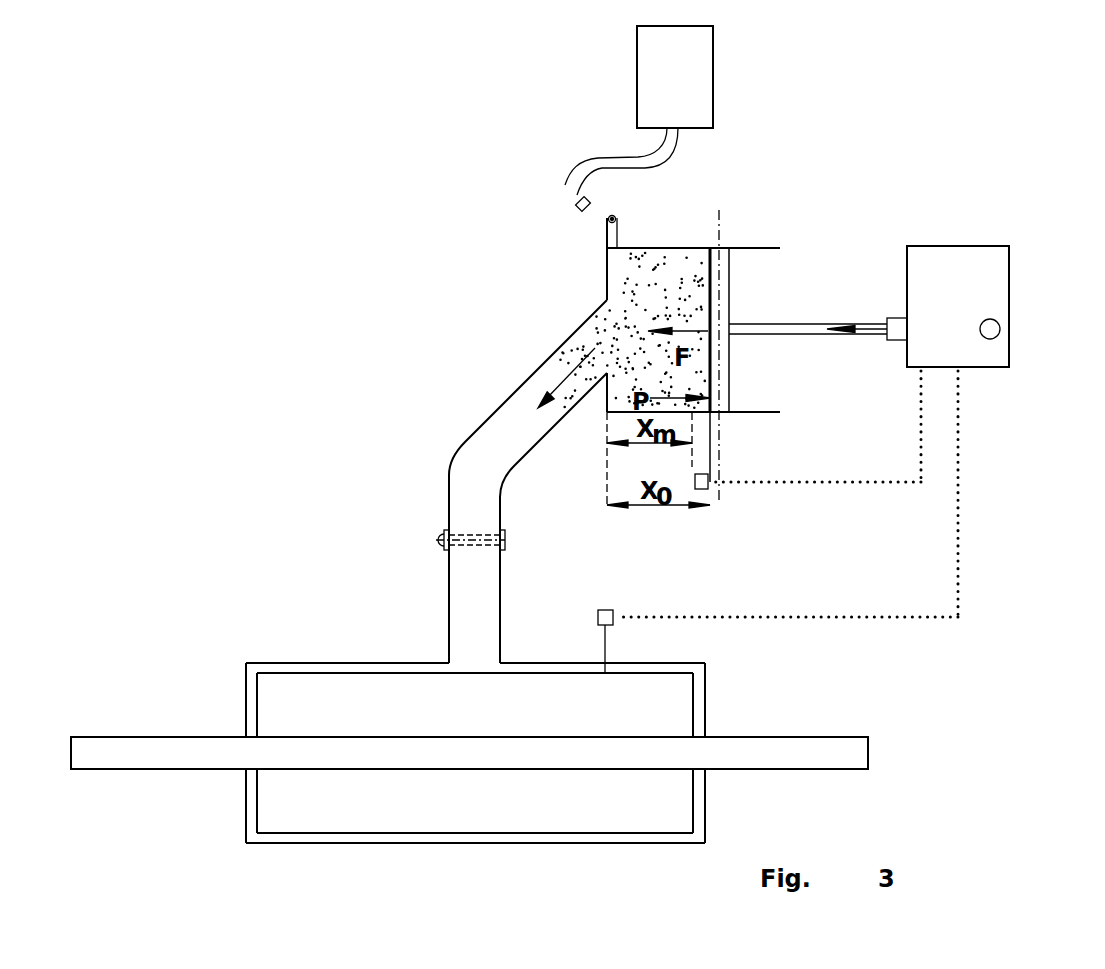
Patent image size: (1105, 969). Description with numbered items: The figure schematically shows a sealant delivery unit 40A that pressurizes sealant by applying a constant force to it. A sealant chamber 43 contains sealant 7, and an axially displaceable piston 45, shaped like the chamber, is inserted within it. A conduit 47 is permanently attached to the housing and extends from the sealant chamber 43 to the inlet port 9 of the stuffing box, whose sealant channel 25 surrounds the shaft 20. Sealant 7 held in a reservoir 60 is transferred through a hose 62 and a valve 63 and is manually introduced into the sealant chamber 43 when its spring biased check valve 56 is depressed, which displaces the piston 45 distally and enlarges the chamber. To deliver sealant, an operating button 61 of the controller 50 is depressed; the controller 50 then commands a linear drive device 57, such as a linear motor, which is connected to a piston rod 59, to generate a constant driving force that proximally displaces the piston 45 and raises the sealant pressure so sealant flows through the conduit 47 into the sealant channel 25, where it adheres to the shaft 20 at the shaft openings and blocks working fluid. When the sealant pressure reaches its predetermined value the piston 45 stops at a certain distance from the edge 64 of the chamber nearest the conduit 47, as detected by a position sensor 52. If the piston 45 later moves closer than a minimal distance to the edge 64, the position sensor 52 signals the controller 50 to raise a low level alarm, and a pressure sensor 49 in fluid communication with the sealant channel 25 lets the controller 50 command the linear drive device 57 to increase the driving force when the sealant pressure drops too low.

The reservoir 60 is at (652, 55).
The hose 62 is at (573, 168).
The valve 63 is at (576, 201).
The sealant delivery unit 40A is at (760, 220).
The spring biased check valve 56 is at (618, 232).
The sealant 7 is at (668, 262).
The sealant chamber 43 is at (703, 248).
The piston 45 is at (721, 290).
The piston rod 59 is at (784, 334).
The linear drive device 57 is at (897, 318).
The controller 50 is at (935, 257).
The operating button 61 is at (1000, 335).
The position sensor 52 is at (703, 489).
The edge 64 is at (597, 397).
The conduit 47 is at (497, 427).
The inlet port 9 is at (460, 617).
The pressure sensor 49 is at (605, 610).
The sealant channel 25 is at (275, 668).
The shaft 20 is at (760, 750).